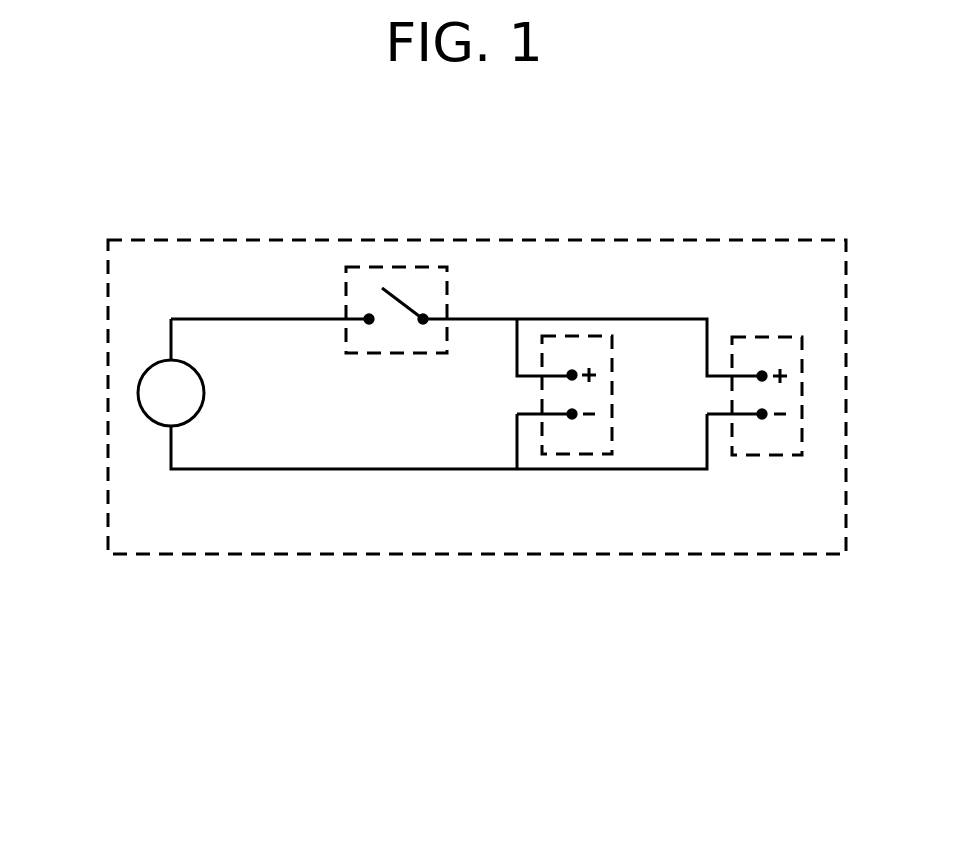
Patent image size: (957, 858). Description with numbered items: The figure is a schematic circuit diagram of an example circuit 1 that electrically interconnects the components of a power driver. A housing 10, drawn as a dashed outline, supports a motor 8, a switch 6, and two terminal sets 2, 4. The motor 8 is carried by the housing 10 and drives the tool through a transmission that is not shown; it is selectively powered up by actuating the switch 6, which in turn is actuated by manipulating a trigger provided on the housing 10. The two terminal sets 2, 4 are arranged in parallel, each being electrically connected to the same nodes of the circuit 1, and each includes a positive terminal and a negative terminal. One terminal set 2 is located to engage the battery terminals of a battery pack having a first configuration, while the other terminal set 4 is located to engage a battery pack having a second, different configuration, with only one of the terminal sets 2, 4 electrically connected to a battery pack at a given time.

The circuit 1 is at (327, 505).
The terminal set 2 is at (612, 392).
The terminal set 4 is at (802, 370).
The switch 6 is at (397, 267).
The motor 8 is at (148, 418).
The housing 10 is at (748, 555).